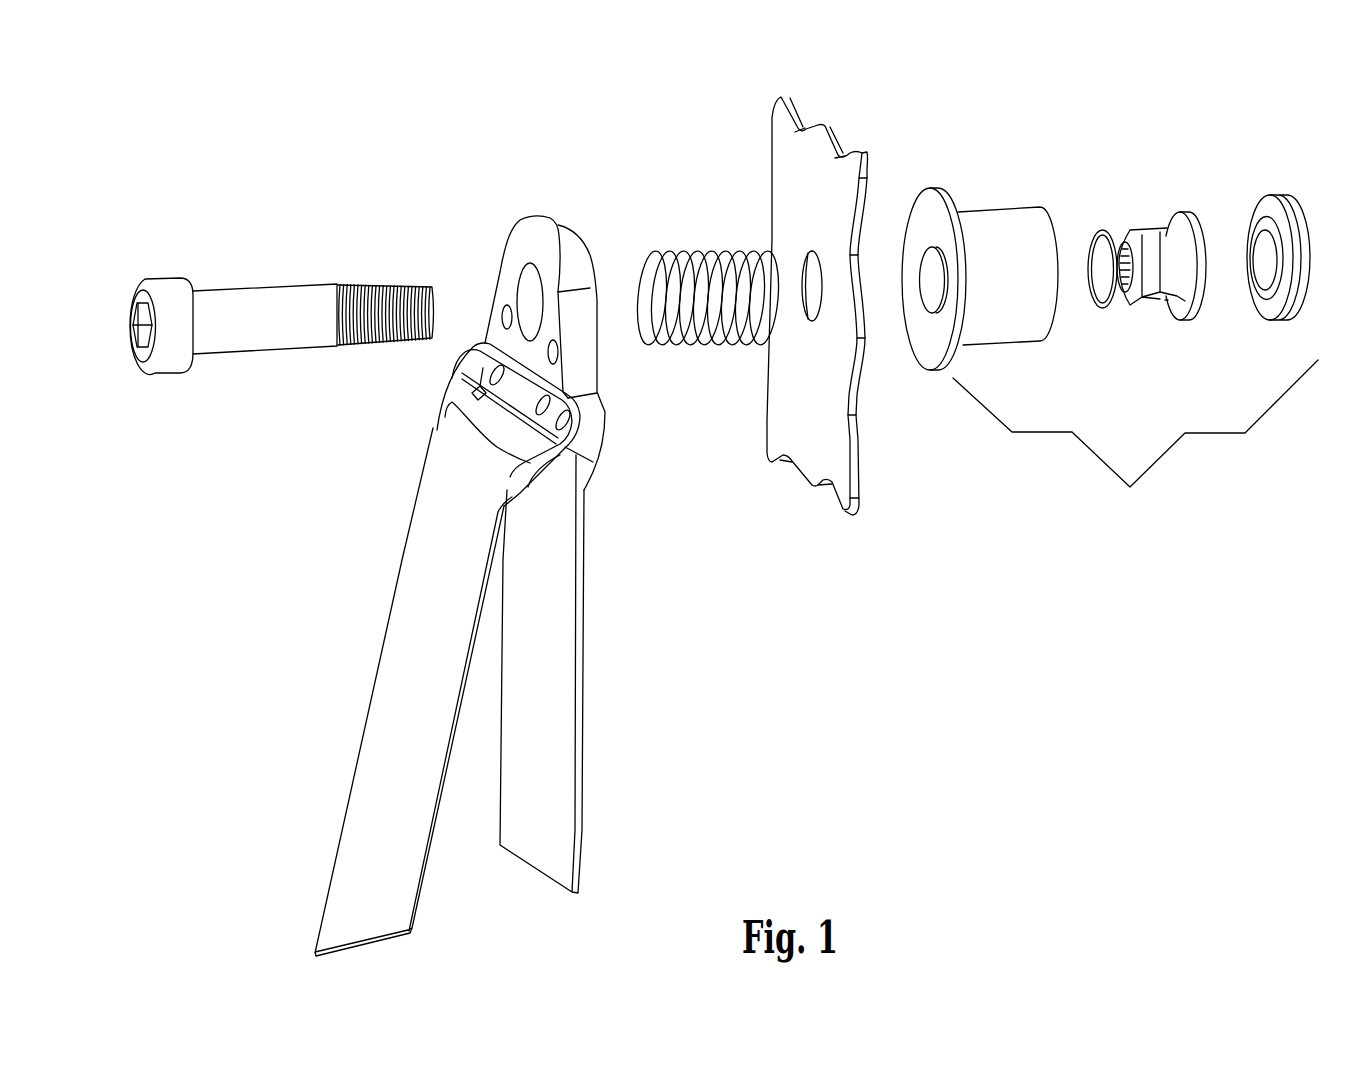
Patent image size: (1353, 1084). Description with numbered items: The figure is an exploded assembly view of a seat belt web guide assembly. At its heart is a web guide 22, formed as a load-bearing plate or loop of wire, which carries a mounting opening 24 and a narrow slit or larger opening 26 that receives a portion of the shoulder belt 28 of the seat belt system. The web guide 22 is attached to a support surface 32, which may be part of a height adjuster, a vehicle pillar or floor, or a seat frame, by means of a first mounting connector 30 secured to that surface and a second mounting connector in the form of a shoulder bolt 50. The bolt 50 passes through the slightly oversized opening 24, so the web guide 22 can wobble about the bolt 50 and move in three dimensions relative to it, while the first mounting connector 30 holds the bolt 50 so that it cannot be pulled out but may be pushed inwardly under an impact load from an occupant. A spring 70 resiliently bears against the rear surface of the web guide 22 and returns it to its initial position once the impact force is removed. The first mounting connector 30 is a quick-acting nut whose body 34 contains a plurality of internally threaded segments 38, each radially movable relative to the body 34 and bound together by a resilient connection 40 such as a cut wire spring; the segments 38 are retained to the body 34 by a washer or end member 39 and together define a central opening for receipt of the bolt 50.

The web guide 22 is at (549, 508).
The mounting opening 24 is at (525, 300).
The narrow slit or larger opening 26 is at (470, 398).
The shoulder belt 28 is at (560, 723).
The first mounting connector 30 is at (1135, 444).
The support surface 32 is at (820, 447).
The body 34 is at (987, 232).
The internally threaded segments 38 is at (1180, 207).
The washer or end member 39 is at (1265, 195).
The resilient connection 40 is at (1115, 223).
The shoulder bolt 50 is at (227, 287).
The spring 70 is at (728, 347).